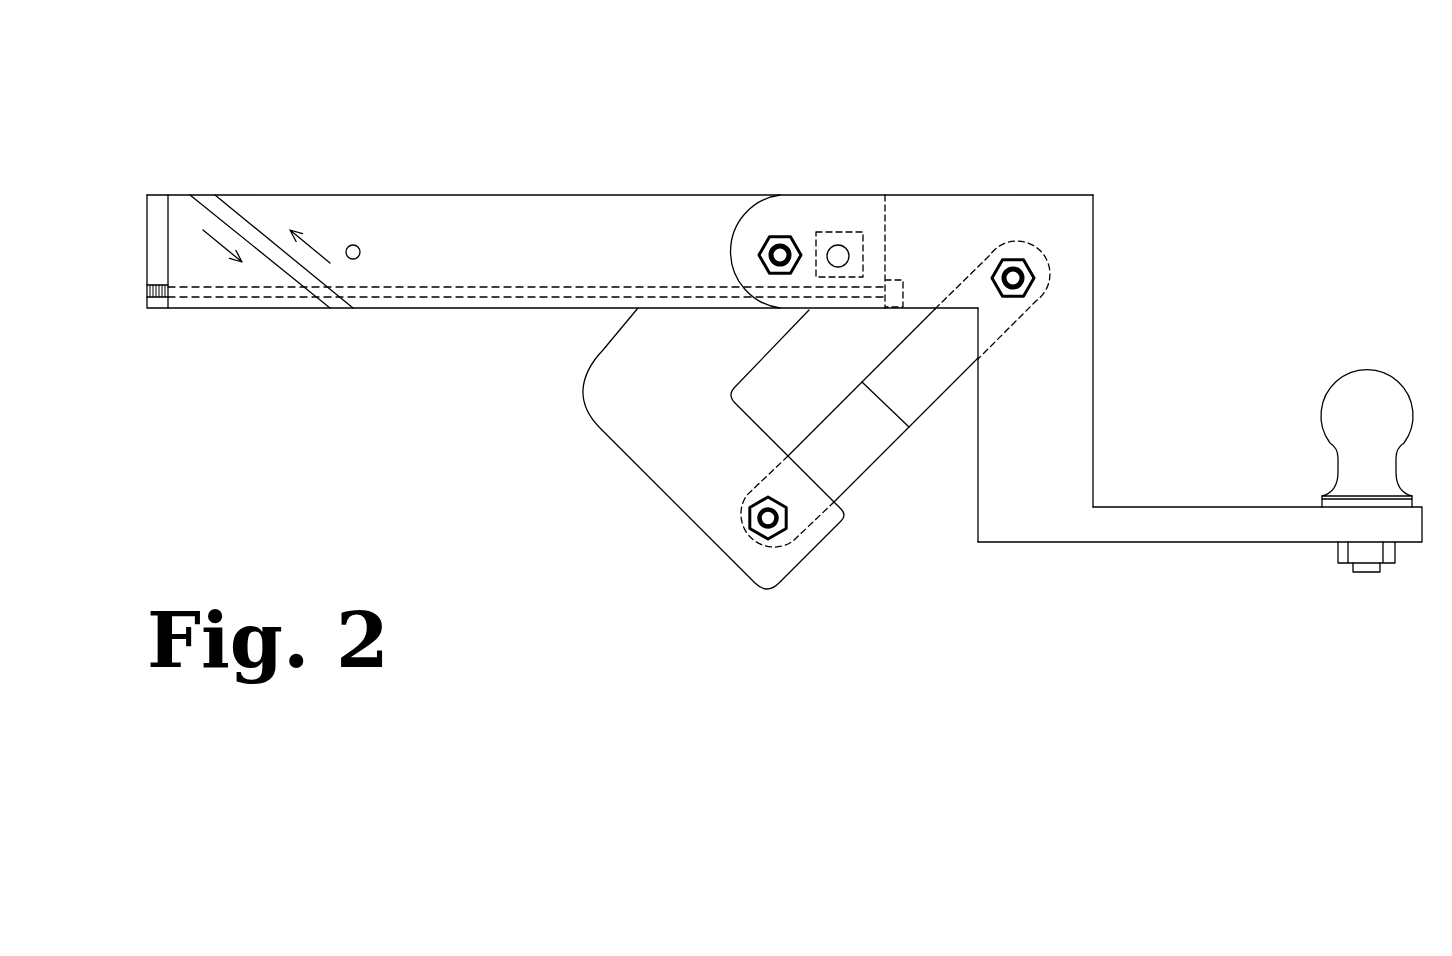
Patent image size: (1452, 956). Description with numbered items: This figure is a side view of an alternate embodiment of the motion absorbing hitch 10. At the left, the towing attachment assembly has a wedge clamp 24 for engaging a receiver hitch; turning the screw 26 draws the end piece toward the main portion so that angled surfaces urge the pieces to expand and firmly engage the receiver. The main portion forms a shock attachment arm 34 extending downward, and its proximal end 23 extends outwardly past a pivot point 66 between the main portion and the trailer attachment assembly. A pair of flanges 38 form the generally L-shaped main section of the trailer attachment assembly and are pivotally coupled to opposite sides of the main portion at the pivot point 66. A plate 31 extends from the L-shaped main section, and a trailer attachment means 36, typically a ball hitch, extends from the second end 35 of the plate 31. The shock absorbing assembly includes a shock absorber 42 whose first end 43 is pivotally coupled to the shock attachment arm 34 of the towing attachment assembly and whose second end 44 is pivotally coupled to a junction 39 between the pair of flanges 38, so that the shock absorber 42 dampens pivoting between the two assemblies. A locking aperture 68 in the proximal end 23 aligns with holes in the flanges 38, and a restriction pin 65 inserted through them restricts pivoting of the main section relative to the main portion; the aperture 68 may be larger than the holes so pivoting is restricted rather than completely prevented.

The motion absorbing hitch 10 is at (477, 447).
The proximal end 23 is at (712, 195).
The wedge clamp 24 is at (208, 163).
The screw 26 is at (502, 290).
The plate 31 is at (1198, 523).
The shock attachment arm 34 is at (650, 425).
The second end 35 is at (1348, 523).
The trailer attachment means 36 is at (1367, 403).
The flanges 38 is at (923, 223).
The junction 39 is at (1068, 224).
The shock absorber 42 is at (917, 380).
The first end 43 is at (740, 518).
The second end 44 is at (1005, 250).
The restriction pin 65 is at (835, 246).
The pivot point 66 is at (771, 236).
The locking aperture 68 is at (858, 238).